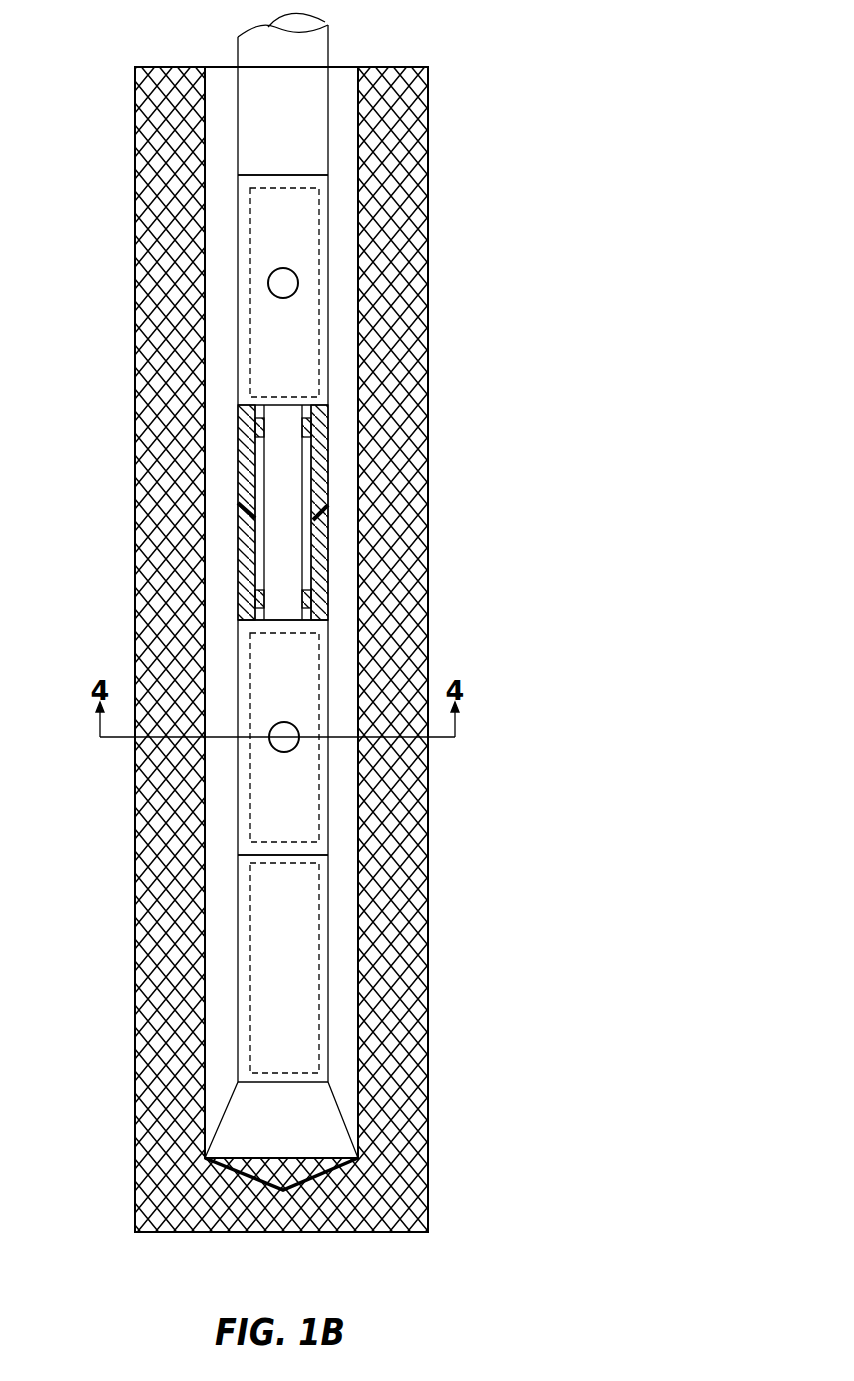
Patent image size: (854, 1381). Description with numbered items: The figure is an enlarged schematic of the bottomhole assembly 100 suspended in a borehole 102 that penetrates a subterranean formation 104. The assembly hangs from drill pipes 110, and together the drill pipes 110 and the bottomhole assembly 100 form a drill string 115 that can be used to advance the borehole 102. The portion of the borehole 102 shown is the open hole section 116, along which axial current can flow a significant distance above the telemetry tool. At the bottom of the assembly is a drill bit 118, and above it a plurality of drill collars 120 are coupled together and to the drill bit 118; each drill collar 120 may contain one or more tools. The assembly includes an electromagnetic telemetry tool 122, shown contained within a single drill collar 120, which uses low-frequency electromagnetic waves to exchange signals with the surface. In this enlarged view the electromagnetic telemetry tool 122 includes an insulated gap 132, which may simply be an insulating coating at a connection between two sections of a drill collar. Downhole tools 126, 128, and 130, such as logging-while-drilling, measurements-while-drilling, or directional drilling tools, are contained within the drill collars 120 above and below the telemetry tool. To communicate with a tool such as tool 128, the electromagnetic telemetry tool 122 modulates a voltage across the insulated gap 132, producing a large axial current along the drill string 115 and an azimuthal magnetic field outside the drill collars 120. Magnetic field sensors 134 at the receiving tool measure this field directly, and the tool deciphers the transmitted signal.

The bottomhole assembly 100 is at (330, 525).
The borehole 102 is at (362, 183).
The subterranean formation 104 is at (403, 252).
The drill pipes 110 is at (328, 52).
The drill string 115 is at (236, 52).
The open hole section 116 is at (190, 380).
The drill bit 118 is at (307, 1140).
The drill collars 120 is at (238, 227).
The electromagnetic telemetry tool 122 is at (308, 468).
The downhole tool 126 is at (300, 998).
The downhole tool 128 is at (300, 765).
The downhole tool 130 is at (303, 363).
The insulated gap 132 is at (243, 510).
The magnetic field sensors 134 is at (283, 283).